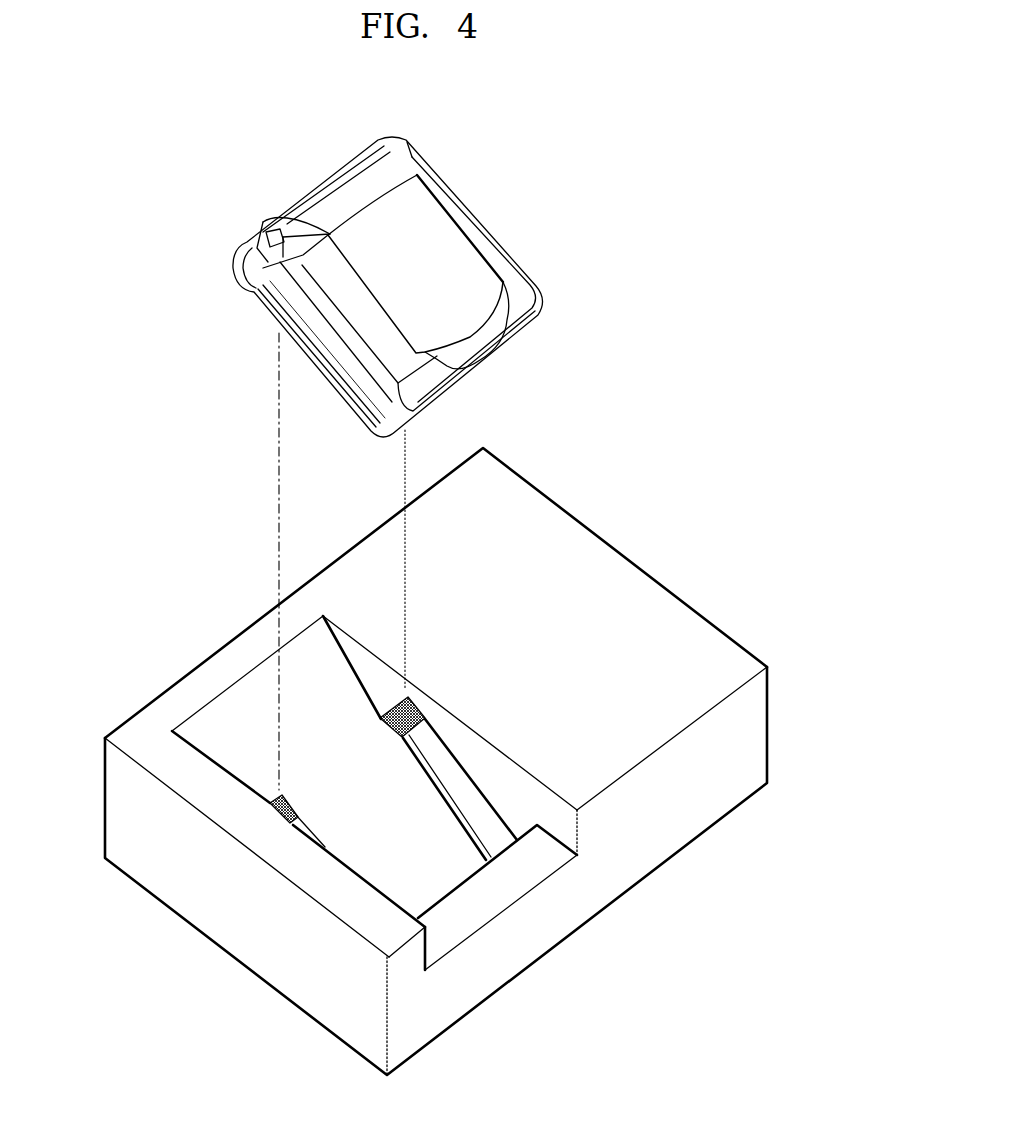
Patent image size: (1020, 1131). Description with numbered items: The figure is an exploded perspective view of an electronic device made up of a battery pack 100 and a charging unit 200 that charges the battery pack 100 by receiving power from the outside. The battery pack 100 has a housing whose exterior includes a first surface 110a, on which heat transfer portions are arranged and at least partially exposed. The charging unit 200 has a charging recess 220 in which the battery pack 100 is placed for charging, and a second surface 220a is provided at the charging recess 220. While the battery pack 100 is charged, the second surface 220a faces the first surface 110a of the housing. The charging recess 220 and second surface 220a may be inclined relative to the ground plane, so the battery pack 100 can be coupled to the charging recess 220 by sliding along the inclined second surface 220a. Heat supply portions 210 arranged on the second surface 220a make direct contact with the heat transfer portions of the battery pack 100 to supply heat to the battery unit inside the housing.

The battery pack 100 is at (400, 287).
The first surface 110a is at (313, 358).
The charging unit 200 is at (436, 761).
The heat supply portions 210 is at (414, 735).
The charging recess 220 is at (342, 736).
The second surface 220a is at (242, 725).